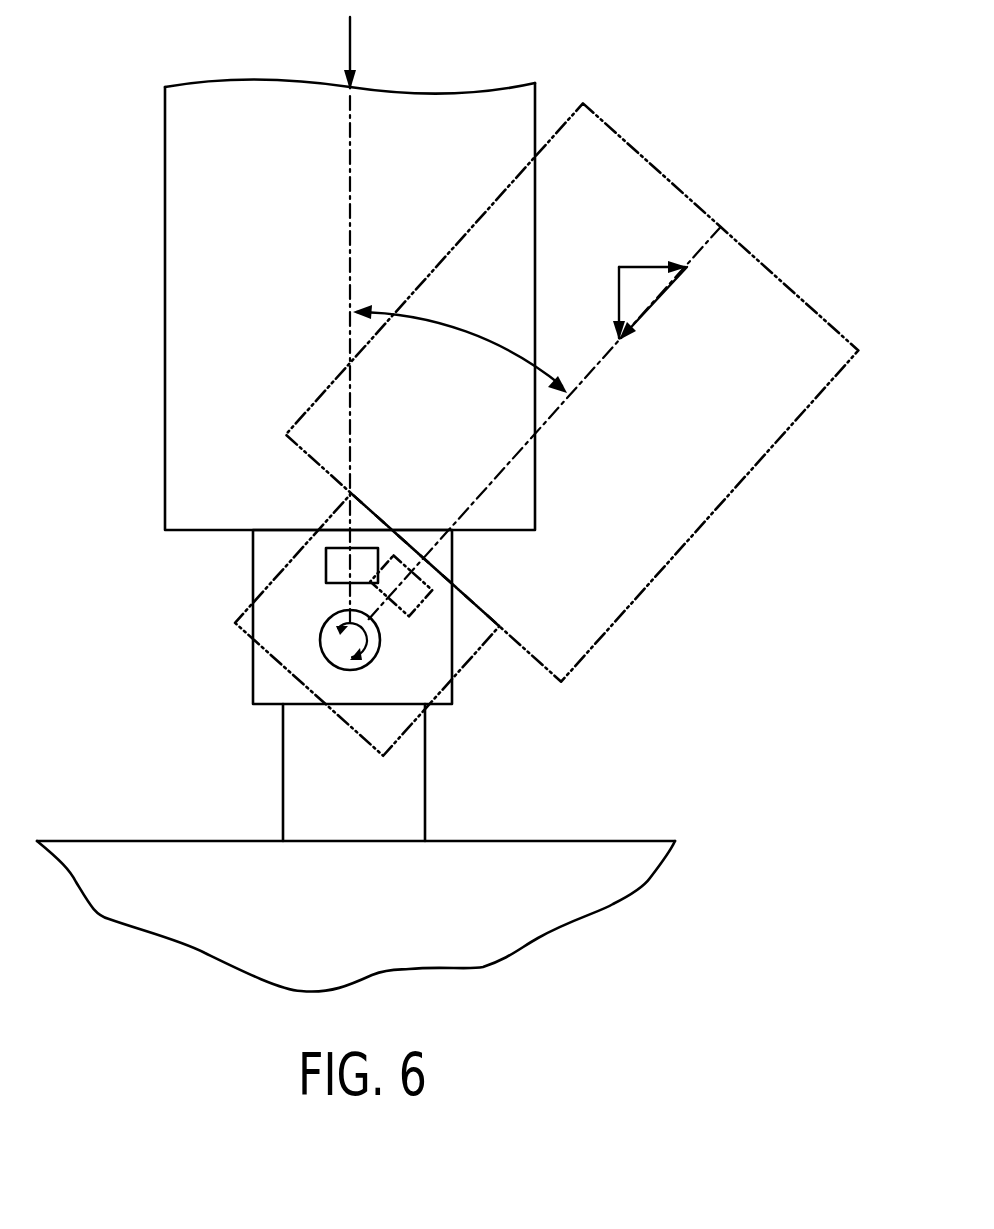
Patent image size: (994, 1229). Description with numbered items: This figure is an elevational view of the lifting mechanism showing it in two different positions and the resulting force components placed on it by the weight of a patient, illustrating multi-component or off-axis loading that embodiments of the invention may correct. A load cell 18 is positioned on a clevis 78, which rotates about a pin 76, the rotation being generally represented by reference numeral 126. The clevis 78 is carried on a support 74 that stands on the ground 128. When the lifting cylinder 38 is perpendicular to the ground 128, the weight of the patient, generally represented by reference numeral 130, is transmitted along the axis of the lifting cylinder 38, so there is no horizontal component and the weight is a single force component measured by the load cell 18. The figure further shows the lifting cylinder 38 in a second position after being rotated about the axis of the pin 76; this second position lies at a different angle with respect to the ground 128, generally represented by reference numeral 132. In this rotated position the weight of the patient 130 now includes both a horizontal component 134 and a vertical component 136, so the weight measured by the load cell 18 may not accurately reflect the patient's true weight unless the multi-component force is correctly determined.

The load cell 18 is at (326, 571).
The lifting cylinder 38 is at (165, 305).
The support column 74 is at (425, 768).
The pin 76 is at (352, 671).
The clevis 78 is at (253, 672).
The rotation about pin 126 is at (372, 638).
The ground 128 is at (601, 841).
The weight of patient 130 is at (353, 48).
The angle of second position 132 is at (467, 332).
The horizontal component 134 is at (643, 267).
The vertical component 136 is at (658, 300).